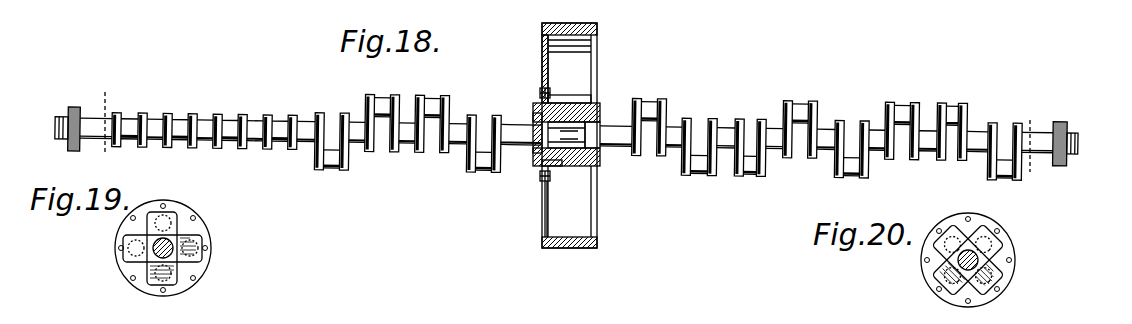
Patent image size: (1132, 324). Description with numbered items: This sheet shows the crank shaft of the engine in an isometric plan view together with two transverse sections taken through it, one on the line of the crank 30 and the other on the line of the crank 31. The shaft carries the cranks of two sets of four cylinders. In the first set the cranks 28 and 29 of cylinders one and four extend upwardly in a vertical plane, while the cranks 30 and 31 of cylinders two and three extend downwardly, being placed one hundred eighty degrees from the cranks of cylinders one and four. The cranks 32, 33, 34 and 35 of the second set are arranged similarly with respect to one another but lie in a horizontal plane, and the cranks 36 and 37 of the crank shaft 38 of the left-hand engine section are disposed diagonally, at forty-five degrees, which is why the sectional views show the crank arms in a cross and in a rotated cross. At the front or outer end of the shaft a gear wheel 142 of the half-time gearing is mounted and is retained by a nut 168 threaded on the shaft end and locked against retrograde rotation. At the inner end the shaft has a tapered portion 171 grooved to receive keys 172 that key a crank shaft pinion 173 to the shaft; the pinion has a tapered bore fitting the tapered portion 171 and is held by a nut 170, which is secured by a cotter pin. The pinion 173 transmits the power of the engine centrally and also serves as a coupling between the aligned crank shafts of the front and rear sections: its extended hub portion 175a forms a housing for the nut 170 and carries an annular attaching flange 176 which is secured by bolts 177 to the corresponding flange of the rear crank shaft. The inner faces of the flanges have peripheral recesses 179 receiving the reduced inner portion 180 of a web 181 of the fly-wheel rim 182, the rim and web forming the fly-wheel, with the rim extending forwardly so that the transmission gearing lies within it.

The crank 28 is at (650, 99).
The crank 29 is at (810, 103).
The crank 30 is at (716, 198).
The crank 31 is at (758, 178).
The crank 32 is at (862, 176).
The crank 33 is at (1013, 181).
The crank 34 is at (913, 103).
The crank 35 is at (963, 105).
The crank 36 is at (446, 97).
The crank 37 is at (166, 114).
The crank shaft 38 is at (227, 143).
The crank shaft gear 142 is at (1064, 122).
The nut 168 is at (1077, 158).
The nut 170 is at (545, 158).
The tapered portion 171 is at (583, 135).
The keys 172 is at (602, 130).
The crank shaft pinion 173 is at (558, 163).
The extended hub portion 175a is at (552, 100).
The attaching flange 176 is at (556, 108).
The bolts 177 is at (541, 92).
The peripheral recesses 179 is at (540, 92).
The reduced inner portion 180 is at (548, 180).
The web 181 is at (543, 186).
The fly-wheel rim 182 is at (542, 243).